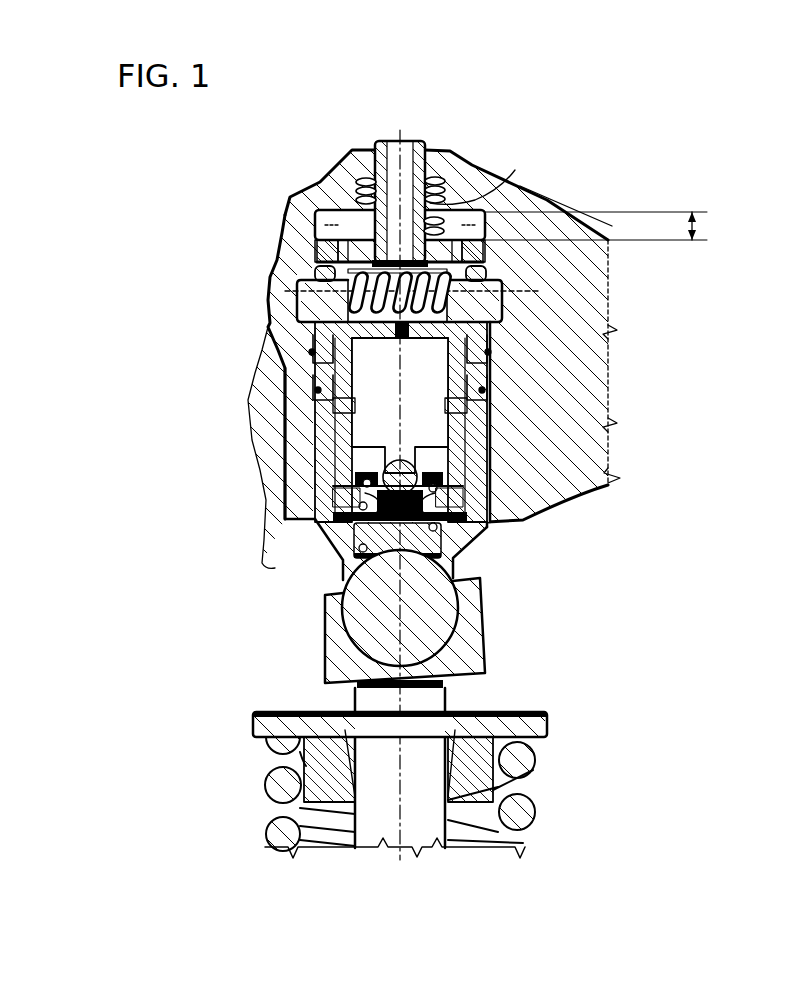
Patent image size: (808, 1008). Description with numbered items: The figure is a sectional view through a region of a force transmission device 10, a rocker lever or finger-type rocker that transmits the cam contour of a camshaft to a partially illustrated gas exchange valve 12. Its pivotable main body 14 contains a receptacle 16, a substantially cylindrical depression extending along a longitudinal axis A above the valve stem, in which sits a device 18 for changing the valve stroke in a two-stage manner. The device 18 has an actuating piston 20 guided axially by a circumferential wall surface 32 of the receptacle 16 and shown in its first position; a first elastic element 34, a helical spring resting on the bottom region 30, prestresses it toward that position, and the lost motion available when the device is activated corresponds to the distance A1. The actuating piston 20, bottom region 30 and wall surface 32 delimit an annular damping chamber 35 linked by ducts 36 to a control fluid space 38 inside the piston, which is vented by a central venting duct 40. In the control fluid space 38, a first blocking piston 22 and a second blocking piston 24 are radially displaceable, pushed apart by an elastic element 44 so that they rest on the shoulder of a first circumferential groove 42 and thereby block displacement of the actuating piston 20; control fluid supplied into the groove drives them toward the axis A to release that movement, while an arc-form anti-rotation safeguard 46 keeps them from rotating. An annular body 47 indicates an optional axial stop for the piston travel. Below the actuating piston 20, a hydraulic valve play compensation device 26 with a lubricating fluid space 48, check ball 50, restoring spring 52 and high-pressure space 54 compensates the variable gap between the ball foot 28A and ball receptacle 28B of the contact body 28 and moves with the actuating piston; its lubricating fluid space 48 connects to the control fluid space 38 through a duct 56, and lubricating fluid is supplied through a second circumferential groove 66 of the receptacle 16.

The force transmission device 10 is at (640, 468).
The gas exchange valve 12 is at (432, 703).
The main body 14 is at (560, 280).
The receptacle 16 is at (503, 545).
The device for changing a valve stroke 18 is at (300, 392).
The actuating piston 20 is at (352, 150).
The first blocking piston 22 is at (290, 344).
The second blocking piston 24 is at (400, 338).
The hydraulic valve play compensation device 26 is at (590, 495).
The contact body 28 is at (386, 619).
The ball foot 28A is at (440, 615).
The ball receptacle 28B is at (355, 657).
The bottom region 30 is at (515, 170).
The circumferential wall surface 32 is at (535, 190).
The first elastic element 34 is at (450, 185).
The damping chamber 35 is at (322, 212).
The ducts 36 is at (330, 248).
The control fluid space 38 is at (500, 263).
The central venting duct 40 is at (390, 147).
The first circumferential groove 42 is at (560, 298).
The elastic element 44 is at (310, 346).
The anti-rotation safeguard 46 is at (322, 270).
The annular body 47 is at (368, 423).
The lubricating fluid space 48 is at (378, 494).
The check ball 50 is at (350, 520).
The restoring spring 52 is at (343, 547).
The high-pressure space 54 is at (508, 545).
The duct 56 is at (515, 447).
The second circumferential groove 66 is at (357, 484).
The longitudinal axis A is at (405, 134).
The distance A1 is at (621, 226).